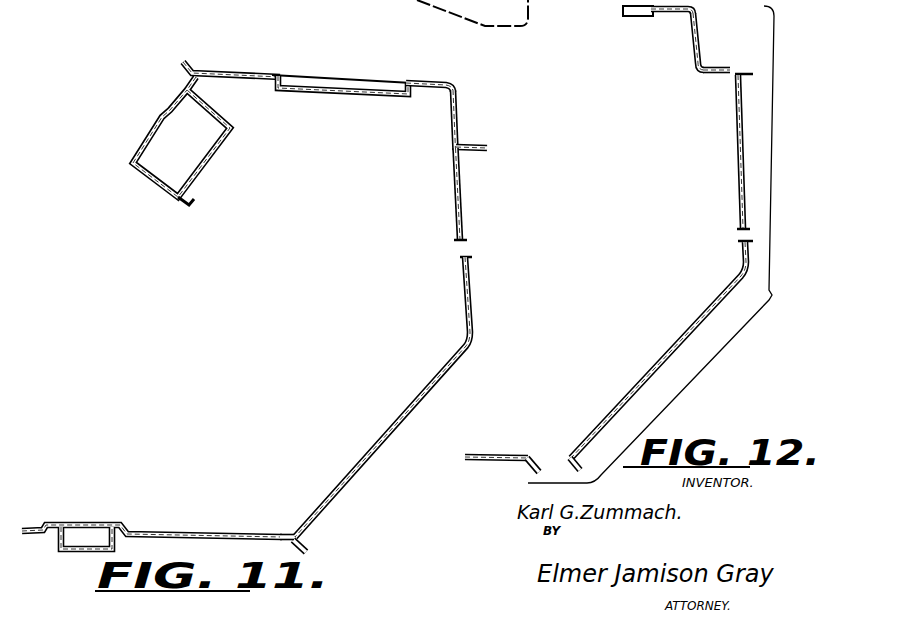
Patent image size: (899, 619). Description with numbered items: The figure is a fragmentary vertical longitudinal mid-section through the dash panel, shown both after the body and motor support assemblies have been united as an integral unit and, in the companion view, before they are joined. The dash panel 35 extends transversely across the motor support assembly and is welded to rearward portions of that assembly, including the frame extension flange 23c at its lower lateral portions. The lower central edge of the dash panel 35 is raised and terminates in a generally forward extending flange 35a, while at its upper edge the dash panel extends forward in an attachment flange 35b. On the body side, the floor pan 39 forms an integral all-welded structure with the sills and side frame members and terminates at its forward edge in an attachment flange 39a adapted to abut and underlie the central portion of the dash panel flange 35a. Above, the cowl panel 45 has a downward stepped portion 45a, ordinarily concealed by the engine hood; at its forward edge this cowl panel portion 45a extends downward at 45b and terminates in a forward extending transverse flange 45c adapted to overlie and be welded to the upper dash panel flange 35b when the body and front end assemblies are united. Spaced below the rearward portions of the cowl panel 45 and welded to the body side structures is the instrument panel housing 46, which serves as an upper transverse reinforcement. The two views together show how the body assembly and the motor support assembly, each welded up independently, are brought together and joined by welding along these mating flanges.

In FIG. 11, the frame extension flange 23c is at (435, 13).
In FIG. 11, the dash panel 35 is at (458, 235).
In FIG. 12, the dash panel 35 is at (741, 225).
In FIG. 11, the forward extending flange 35a is at (300, 540).
In FIG. 12, the forward extending flange 35a is at (564, 460).
In FIG. 11, the attachment flange 35b is at (466, 152).
In FIG. 12, the attachment flange 35b is at (740, 85).
In FIG. 11, the floor pan 39 is at (205, 533).
In FIG. 12, the floor pan 39 is at (471, 456).
In FIG. 11, the attachment flange 39a is at (291, 541).
In FIG. 12, the attachment flange 39a is at (533, 468).
In FIG. 11, the cowl panel 45 is at (187, 62).
In FIG. 11, the downward stepped portion 45a is at (444, 84).
In FIG. 12, the downward stepped portion 45a is at (668, 14).
In FIG. 11, the downward extending portion 45b is at (458, 99).
In FIG. 12, the downward extending portion 45b is at (698, 38).
In FIG. 11, the forward extending transverse flange 45c is at (470, 146).
In FIG. 12, the forward extending transverse flange 45c is at (718, 72).
In FIG. 11, the instrument panel housing 46 is at (231, 129).